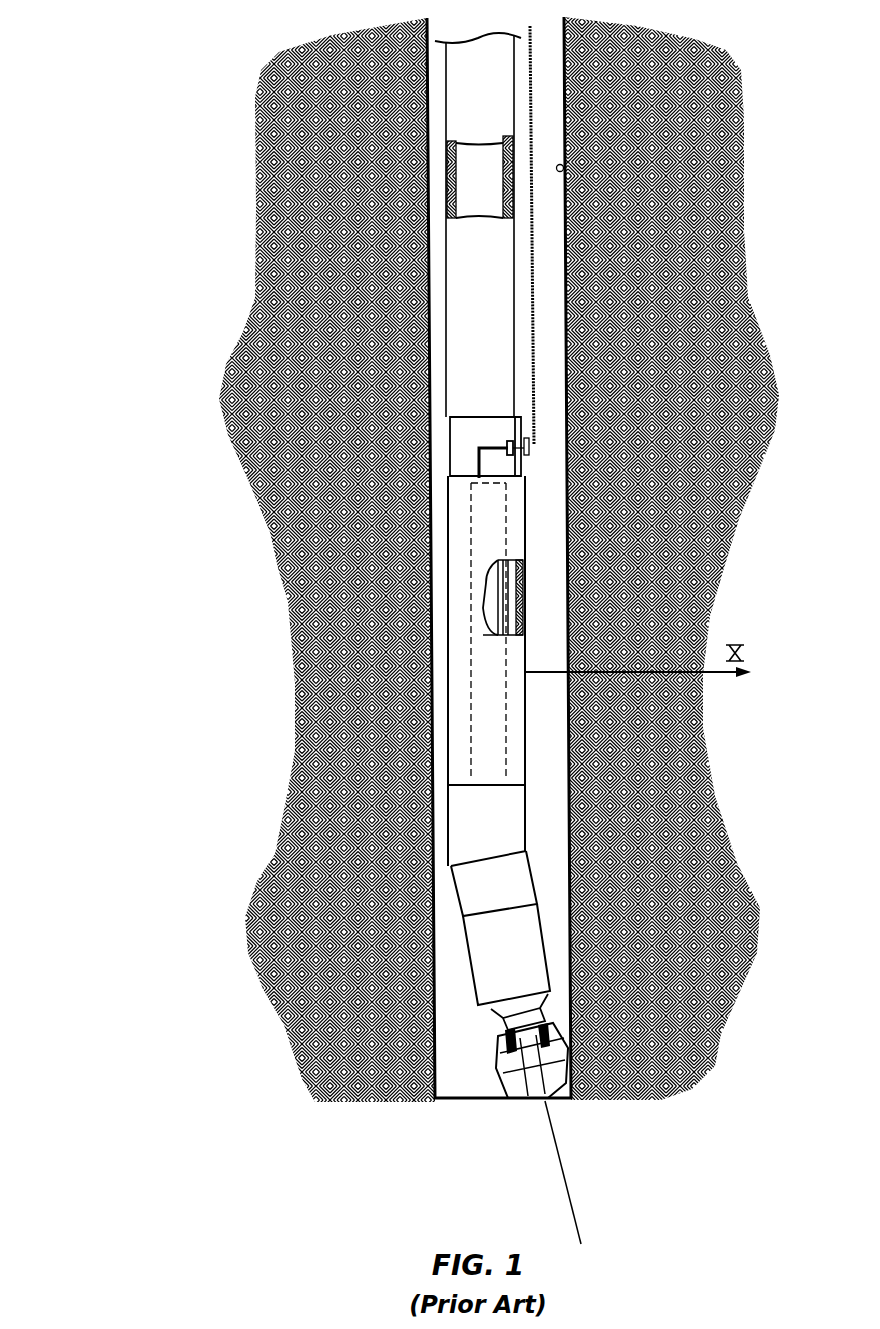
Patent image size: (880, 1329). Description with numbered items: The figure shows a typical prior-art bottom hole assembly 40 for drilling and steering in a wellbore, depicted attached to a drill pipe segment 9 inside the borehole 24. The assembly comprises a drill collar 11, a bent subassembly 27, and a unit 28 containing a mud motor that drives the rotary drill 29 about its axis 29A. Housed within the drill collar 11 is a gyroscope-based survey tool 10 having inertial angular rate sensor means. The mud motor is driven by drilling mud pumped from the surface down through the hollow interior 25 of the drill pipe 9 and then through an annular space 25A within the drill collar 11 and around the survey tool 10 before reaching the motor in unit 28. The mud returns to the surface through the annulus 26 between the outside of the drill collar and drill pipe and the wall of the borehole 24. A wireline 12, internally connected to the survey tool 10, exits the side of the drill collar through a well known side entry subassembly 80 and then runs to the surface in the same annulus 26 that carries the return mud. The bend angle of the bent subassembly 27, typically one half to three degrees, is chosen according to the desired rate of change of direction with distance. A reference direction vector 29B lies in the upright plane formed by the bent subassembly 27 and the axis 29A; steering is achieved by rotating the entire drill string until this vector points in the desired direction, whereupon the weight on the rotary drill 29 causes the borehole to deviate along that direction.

The drill pipe segment 9 is at (445, 82).
The gyroscope-based survey tool 10 is at (472, 633).
The drill collar 11 is at (438, 528).
The wireline 12 is at (527, 80).
The borehole 24 is at (556, 160).
The hollow interior of the drill pipe 25 is at (452, 170).
The annular space 25A is at (502, 583).
The annulus 26 is at (543, 488).
The bent subassembly 27 is at (452, 875).
The mud motor unit 28 is at (533, 950).
The rotary drill 29 is at (490, 1070).
The axis 29A is at (588, 1172).
The reference direction vector 29B is at (716, 671).
The bottom hole assembly 40 is at (198, 418).
The side entry subassembly 80 is at (455, 442).